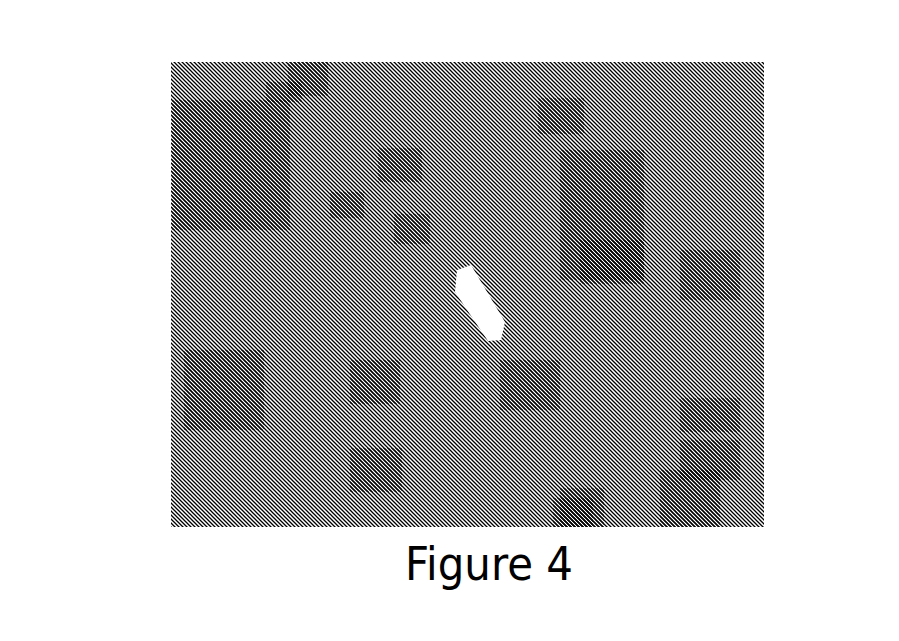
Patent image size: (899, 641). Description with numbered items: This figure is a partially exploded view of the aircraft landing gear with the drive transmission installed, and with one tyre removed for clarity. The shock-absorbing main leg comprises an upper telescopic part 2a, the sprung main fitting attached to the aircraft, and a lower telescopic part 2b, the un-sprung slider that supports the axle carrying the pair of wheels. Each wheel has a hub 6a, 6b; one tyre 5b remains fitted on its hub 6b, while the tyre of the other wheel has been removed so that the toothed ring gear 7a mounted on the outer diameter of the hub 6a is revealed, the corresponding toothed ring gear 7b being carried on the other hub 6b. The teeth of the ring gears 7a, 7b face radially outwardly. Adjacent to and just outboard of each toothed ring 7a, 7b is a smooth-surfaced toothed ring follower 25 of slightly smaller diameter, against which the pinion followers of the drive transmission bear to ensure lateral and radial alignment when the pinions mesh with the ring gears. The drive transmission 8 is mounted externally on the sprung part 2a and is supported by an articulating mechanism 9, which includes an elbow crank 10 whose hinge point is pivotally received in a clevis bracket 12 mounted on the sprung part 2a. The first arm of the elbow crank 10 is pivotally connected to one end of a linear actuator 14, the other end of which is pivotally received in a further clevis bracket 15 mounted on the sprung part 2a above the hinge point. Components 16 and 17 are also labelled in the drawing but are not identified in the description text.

The upper telescopic part 2a is at (280, 158).
The lower telescopic part 2b is at (530, 385).
The tyre 5b is at (700, 282).
The hub 6a is at (375, 470).
The hub 6b is at (683, 497).
The toothed ring gear 7a is at (580, 503).
The toothed ring gear 7b is at (700, 462).
The drive transmission 8 is at (557, 113).
The articulating mechanism 9 is at (345, 205).
The elbow crank 10 is at (395, 163).
The clevis bracket 12 is at (408, 228).
The linear actuator 14 is at (307, 82).
The clevis bracket 15 is at (280, 93).
The bearing 16 is at (597, 205).
The bearing ring 17 is at (600, 258).
The toothed ring follower 25 is at (707, 413).